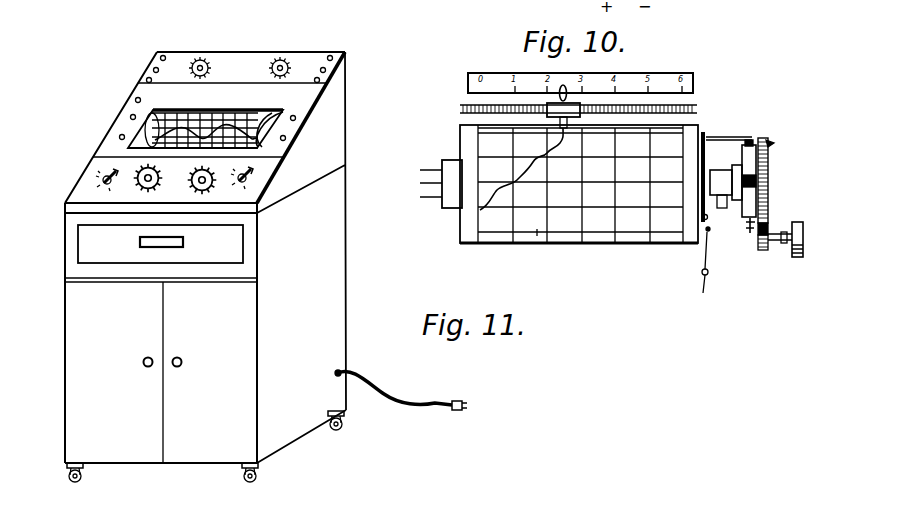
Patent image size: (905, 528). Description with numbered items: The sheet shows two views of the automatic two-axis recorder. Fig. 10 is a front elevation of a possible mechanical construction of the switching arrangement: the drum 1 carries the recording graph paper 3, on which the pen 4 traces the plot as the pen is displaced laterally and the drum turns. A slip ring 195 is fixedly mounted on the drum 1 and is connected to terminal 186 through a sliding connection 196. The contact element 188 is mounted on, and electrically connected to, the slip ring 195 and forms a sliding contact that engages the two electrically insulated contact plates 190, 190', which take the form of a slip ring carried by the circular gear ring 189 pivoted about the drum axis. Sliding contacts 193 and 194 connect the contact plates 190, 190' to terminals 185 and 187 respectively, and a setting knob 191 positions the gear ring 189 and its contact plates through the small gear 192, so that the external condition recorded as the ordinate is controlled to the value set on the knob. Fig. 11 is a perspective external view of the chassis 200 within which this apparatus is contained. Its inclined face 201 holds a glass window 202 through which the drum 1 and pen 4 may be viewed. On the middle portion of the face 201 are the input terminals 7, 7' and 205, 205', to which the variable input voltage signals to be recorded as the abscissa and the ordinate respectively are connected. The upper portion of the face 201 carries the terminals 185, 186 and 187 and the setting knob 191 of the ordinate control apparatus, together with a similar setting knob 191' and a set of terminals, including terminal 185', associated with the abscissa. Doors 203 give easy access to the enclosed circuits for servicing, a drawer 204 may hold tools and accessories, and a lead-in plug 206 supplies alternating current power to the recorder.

In FIG. 11, the drum 1 is at (115, 146).
In FIG. 11, the recording graph paper 3 is at (185, 110).
In FIG. 10, the recording graph paper 3 is at (567, 243).
In FIG. 11, the pen 4 is at (215, 112).
In FIG. 10, the pen 4 is at (567, 130).
In FIG. 11, the input terminal 7 is at (308, 122).
In FIG. 11, the input terminal 7' is at (301, 144).
In FIG. 11, the terminal 185 is at (133, 51).
In FIG. 11, the terminal 185' is at (363, 53).
In FIG. 11, the terminal 186 is at (128, 67).
In FIG. 11, the terminal 187 is at (124, 79).
In FIG. 10, the contact element 188 is at (723, 136).
In FIG. 10, the circular gear ring 189 is at (766, 171).
In FIG. 10, the contact plate 190 is at (780, 180).
In FIG. 10, the contact plate 190' is at (786, 136).
In FIG. 11, the setting knob 191 is at (210, 52).
In FIG. 10, the setting knob 191 is at (785, 265).
In FIG. 11, the setting knob 191' is at (295, 52).
In FIG. 10, the small gear 192 is at (764, 251).
In FIG. 10, the sliding contact 193 is at (750, 139).
In FIG. 10, the sliding contact 194 is at (742, 215).
In FIG. 10, the slip ring 195 is at (702, 225).
In FIG. 10, the sliding connection 196 is at (703, 275).
In FIG. 11, the chassis 200 is at (342, 308).
In FIG. 11, the face 201 is at (135, 100).
In FIG. 11, the glass window 202 is at (254, 111).
In FIG. 11, the doors 203 is at (172, 466).
In FIG. 11, the drawer 204 is at (78, 256).
In FIG. 11, the input terminal 205 is at (99, 118).
In FIG. 11, the input terminal 205' is at (87, 143).
In FIG. 11, the lead-in plug 206 is at (443, 402).